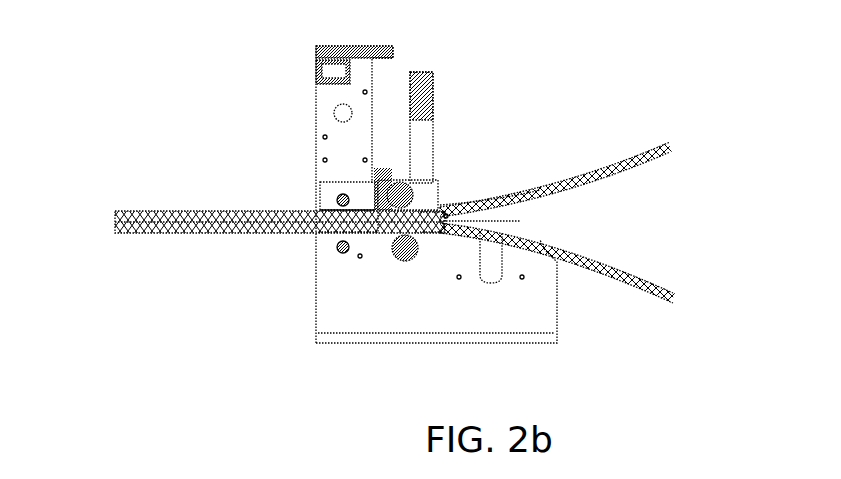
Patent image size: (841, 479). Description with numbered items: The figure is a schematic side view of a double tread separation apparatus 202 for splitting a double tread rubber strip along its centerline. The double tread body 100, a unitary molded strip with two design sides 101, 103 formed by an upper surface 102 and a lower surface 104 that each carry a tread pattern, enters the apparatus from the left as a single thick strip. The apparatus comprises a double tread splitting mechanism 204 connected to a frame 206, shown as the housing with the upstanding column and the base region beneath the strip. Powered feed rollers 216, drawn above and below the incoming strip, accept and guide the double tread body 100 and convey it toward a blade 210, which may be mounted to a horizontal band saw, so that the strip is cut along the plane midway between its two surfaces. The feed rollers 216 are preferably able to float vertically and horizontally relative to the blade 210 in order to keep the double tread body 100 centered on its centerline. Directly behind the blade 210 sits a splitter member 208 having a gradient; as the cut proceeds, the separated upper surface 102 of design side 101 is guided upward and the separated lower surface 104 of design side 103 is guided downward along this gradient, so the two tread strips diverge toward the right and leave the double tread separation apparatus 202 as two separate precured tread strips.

The double tread body 100 is at (118, 222).
The design side 101 is at (555, 151).
The upper surface 102 is at (658, 148).
The design side 103 is at (556, 285).
The lower surface 104 is at (645, 285).
The double tread separation apparatus 202 is at (728, 129).
The double tread splitting mechanism 204 is at (520, 188).
The frame 206 is at (334, 294).
The splitter member 208 is at (495, 220).
The blade 210 is at (427, 217).
The powered feed rollers 216 is at (412, 188).